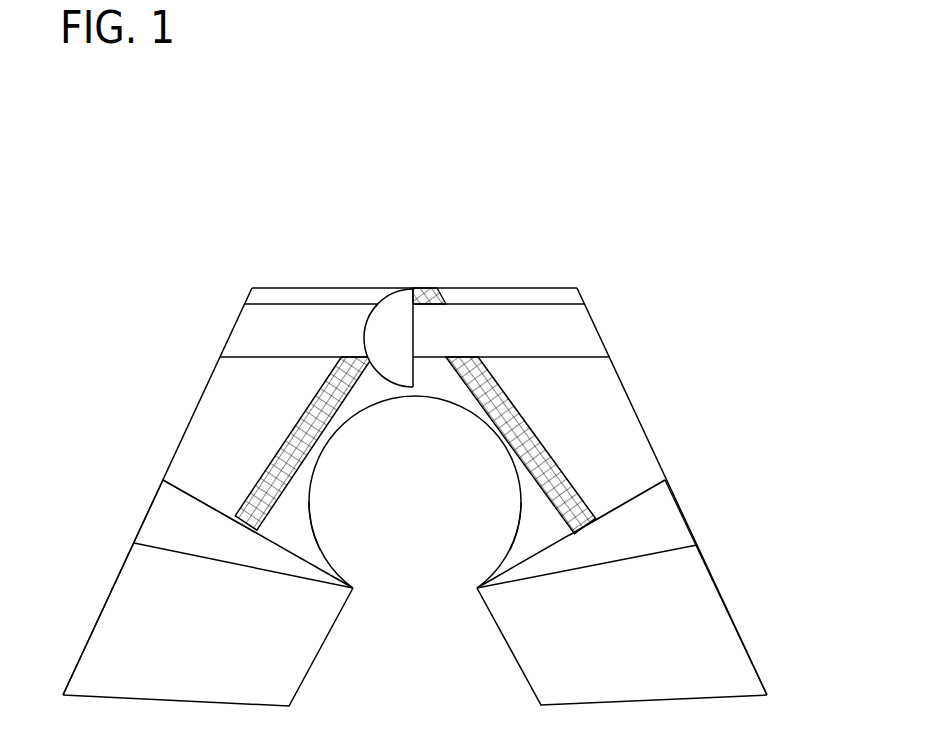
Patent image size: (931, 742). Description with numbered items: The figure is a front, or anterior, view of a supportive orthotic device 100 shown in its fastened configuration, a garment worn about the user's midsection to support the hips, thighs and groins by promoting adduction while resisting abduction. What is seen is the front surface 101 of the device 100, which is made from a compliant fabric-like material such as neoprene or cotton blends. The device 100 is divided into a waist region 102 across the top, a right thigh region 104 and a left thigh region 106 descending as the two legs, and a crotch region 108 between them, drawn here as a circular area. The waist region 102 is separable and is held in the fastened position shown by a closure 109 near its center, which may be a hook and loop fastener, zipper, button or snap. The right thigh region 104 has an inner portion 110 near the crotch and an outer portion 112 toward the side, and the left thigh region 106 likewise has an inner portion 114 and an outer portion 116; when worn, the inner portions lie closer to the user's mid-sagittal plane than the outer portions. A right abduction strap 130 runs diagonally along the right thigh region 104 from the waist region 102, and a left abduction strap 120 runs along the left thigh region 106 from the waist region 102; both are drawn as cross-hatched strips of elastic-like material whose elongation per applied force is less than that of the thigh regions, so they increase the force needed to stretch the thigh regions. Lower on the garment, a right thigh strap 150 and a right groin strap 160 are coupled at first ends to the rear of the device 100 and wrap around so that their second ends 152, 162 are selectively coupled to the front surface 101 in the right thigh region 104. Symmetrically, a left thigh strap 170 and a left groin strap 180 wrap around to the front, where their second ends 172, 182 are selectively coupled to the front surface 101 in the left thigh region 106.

The supportive orthotic device 100 is at (582, 266).
The front surface 101 is at (348, 275).
The waist region 102 is at (475, 288).
The right thigh region 104 is at (188, 391).
The left thigh region 106 is at (647, 407).
The crotch region 108 is at (418, 398).
The closure 109 is at (397, 308).
The inner portion 110 is at (305, 545).
The outer portion 112 is at (207, 448).
The inner portion 114 is at (532, 532).
The outer portion 116 is at (628, 453).
The left abduction strap 120 is at (525, 407).
The right abduction strap 130 is at (310, 405).
The right thigh strap 150 is at (140, 678).
The second end 152 is at (95, 625).
The right groin strap 160 is at (180, 526).
The second end 162 is at (158, 492).
The left thigh strap 170 is at (720, 677).
The second end 172 is at (737, 628).
The left groin strap 180 is at (652, 513).
The second end 182 is at (690, 524).